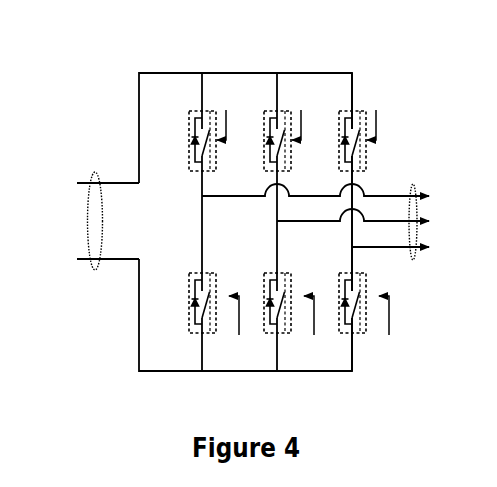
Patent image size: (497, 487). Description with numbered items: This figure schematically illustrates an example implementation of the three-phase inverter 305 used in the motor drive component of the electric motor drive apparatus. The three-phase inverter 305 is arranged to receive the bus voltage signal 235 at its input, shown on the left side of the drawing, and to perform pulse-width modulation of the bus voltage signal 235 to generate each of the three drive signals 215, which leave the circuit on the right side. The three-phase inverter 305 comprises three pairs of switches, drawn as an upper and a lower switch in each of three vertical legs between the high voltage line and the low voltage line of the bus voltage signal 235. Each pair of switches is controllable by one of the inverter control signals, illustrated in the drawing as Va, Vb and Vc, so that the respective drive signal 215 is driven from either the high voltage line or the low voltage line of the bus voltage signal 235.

The 3-phase inverter 305 is at (98, 69).
The bus voltage signal 235 is at (99, 268).
The drive signals 215 is at (413, 260).